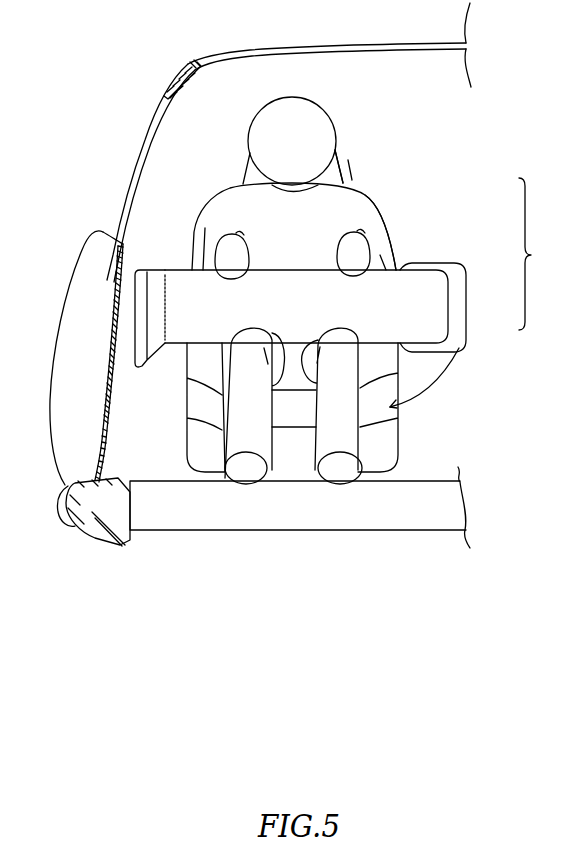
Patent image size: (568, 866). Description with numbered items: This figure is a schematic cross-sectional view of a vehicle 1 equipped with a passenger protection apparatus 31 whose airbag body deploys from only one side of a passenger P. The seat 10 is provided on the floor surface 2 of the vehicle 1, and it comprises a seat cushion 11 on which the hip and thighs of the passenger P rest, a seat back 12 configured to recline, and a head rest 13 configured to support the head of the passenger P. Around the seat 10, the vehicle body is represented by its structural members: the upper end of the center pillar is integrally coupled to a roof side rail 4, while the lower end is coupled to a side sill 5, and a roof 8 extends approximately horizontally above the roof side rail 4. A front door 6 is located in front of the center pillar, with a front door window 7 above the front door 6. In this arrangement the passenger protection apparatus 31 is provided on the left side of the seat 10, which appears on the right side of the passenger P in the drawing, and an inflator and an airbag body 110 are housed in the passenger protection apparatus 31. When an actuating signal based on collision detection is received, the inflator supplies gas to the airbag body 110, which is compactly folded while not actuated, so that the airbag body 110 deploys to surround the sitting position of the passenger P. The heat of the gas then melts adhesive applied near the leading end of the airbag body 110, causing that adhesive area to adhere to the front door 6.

The vehicle 1 is at (372, 34).
The floor surface 2 is at (213, 523).
The roof side rail 4 is at (166, 83).
The side sill 5 is at (94, 514).
The front door 6 is at (58, 461).
The front door window 7 is at (138, 161).
The roof 8 is at (191, 65).
The seat 10 is at (538, 254).
The seat cushion 11 is at (463, 332).
The seat back 12 is at (398, 268).
The head rest 13 is at (343, 173).
The passenger protection apparatus 31 is at (460, 349).
The airbag body 110 is at (185, 278).
The passenger P is at (325, 141).